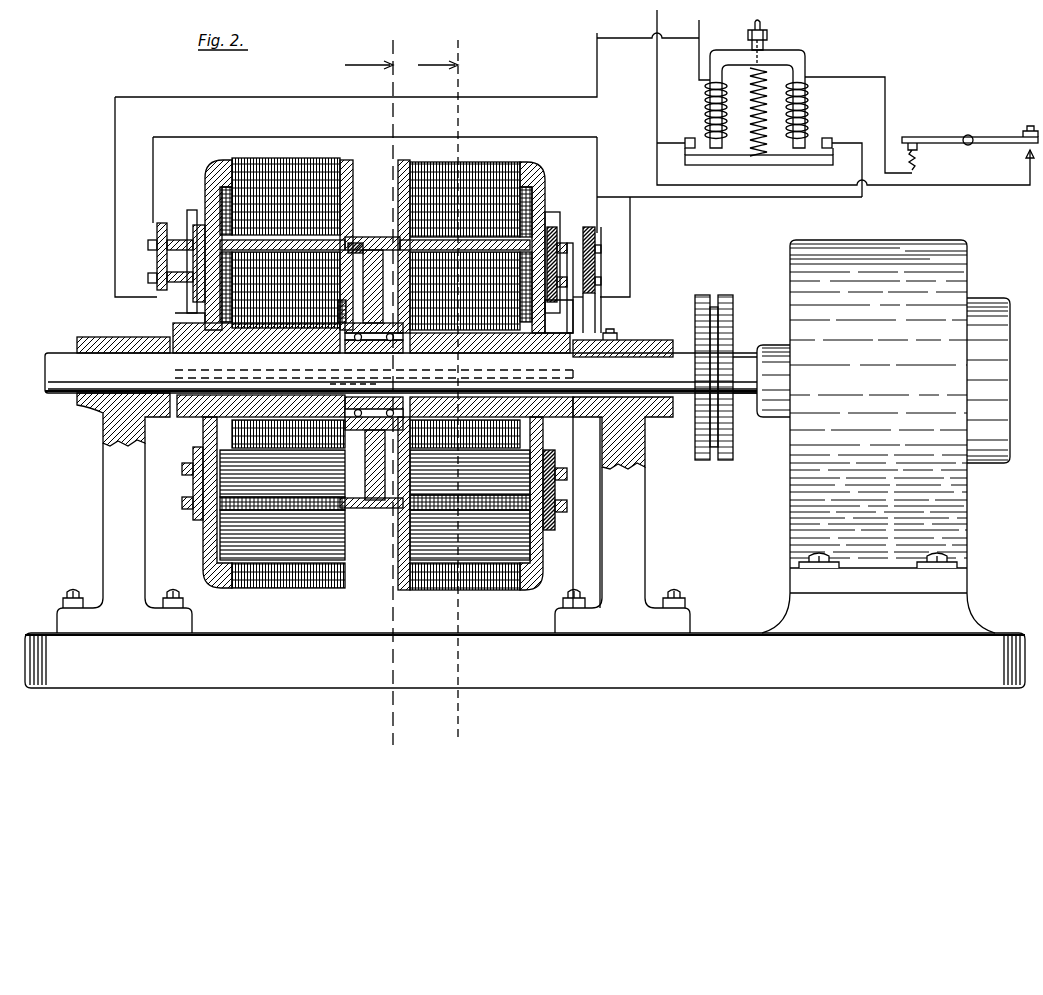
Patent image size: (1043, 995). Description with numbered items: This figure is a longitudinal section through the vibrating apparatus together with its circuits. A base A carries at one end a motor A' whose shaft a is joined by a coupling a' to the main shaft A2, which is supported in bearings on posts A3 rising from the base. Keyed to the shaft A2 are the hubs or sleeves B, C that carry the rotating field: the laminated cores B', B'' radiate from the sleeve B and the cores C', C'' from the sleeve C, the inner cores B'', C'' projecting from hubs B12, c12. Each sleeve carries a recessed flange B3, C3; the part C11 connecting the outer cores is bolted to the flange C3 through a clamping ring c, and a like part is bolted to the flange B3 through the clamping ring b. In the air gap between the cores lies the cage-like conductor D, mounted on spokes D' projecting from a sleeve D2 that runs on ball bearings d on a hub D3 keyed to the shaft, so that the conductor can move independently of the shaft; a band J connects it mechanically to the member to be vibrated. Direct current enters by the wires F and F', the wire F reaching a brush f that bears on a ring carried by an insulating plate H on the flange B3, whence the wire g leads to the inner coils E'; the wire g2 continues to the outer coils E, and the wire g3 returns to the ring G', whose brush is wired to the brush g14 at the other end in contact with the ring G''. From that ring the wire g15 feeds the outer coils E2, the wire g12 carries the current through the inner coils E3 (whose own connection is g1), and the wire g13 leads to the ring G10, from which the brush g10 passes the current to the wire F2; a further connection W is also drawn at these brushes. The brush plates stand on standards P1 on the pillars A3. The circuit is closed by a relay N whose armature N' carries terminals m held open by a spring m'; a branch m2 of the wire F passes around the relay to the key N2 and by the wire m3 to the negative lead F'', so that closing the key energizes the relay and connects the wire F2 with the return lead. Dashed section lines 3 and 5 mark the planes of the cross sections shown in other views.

The base A is at (525, 660).
The motor A' is at (883, 436).
The shaft A2 is at (680, 342).
The posts A3 is at (103, 502).
The hub B is at (211, 380).
The core B' is at (282, 234).
The core B'' is at (282, 516).
The recessed flange B3 is at (205, 178).
The hub B12 is at (350, 312).
The clamping ring b is at (347, 235).
The hub C is at (375, 169).
The core C' is at (566, 475).
The core C'' is at (486, 376).
The recessed flange C3 is at (547, 185).
The connecting part C11 is at (590, 227).
The clamping ring c is at (405, 160).
The hub c12 is at (575, 310).
The conductor D is at (371, 365).
The spokes D' is at (374, 353).
The sleeve D2 is at (362, 427).
The hub D3 is at (372, 384).
The ball bearings d is at (335, 372).
The outer series of coils E is at (220, 230).
The inner series of coils E' is at (401, 373).
The outer series of coils E2 is at (556, 225).
The inner set of coils E3 is at (603, 249).
The wire F is at (655, 44).
The wire F' is at (379, 165).
The negative lead wire F'' is at (843, 96).
The wire F2 is at (785, 197).
The brush f is at (193, 286).
The ring G' is at (180, 379).
The ring G'' is at (180, 346).
The ring G10 is at (603, 280).
The wire g is at (175, 313).
The connection g1 is at (162, 245).
The wire g2 is at (180, 240).
The wire g3 is at (190, 225).
The brush g10 is at (610, 290).
The wire g12 is at (564, 277).
The wire g13 is at (580, 297).
The brush g14 is at (573, 250).
The wire g15 is at (565, 243).
The insulating plate H is at (187, 296).
The wire or band J is at (380, 238).
The relay N is at (775, 84).
The armature N' is at (764, 165).
The key N2 is at (950, 133).
The terminals m is at (759, 152).
The spring m' is at (748, 112).
The wire m2 is at (790, 115).
The wire m3 is at (1013, 165).
The standards P1 is at (620, 331).
The wire W is at (585, 305).
The motor shaft a is at (745, 357).
The coupling a' is at (714, 368).
The section line 3 is at (441, 385).
The section line 5 is at (371, 386).